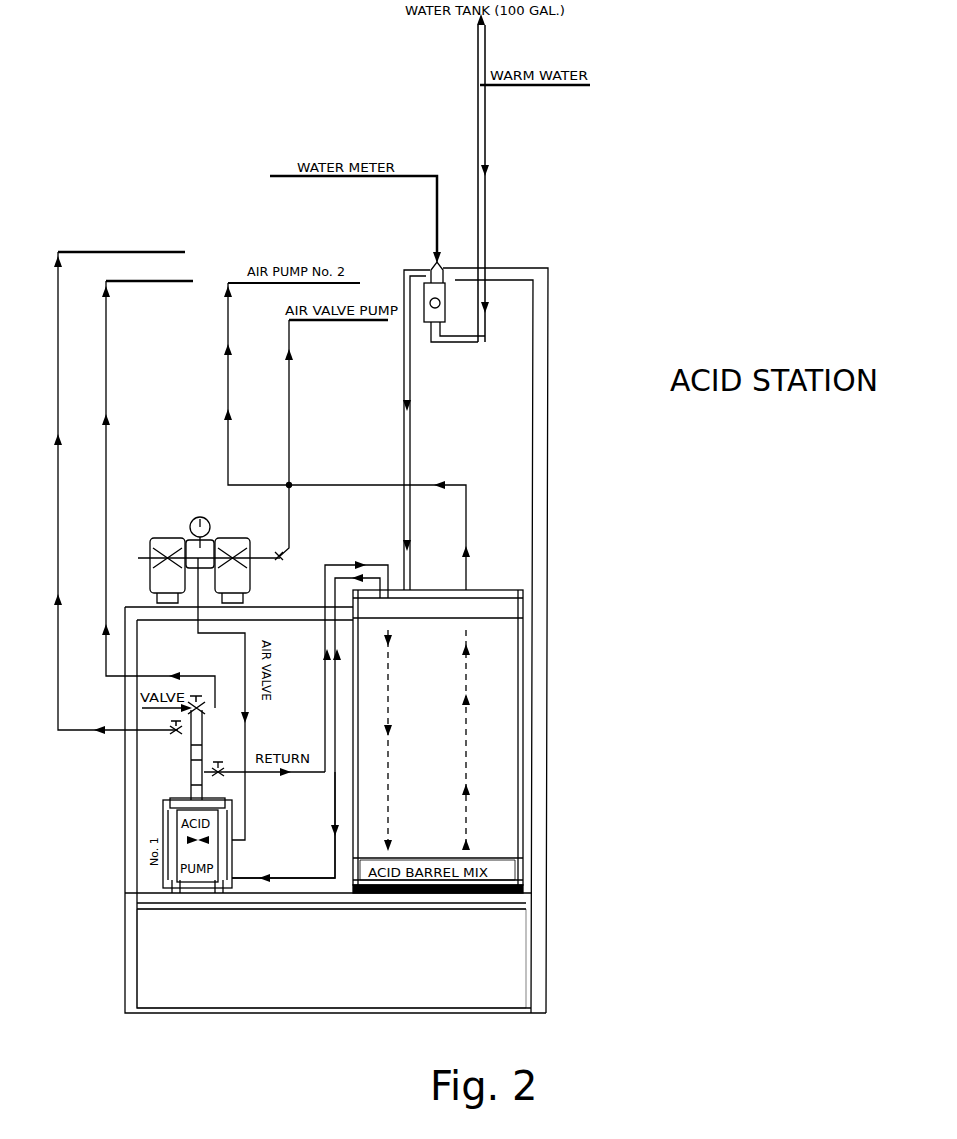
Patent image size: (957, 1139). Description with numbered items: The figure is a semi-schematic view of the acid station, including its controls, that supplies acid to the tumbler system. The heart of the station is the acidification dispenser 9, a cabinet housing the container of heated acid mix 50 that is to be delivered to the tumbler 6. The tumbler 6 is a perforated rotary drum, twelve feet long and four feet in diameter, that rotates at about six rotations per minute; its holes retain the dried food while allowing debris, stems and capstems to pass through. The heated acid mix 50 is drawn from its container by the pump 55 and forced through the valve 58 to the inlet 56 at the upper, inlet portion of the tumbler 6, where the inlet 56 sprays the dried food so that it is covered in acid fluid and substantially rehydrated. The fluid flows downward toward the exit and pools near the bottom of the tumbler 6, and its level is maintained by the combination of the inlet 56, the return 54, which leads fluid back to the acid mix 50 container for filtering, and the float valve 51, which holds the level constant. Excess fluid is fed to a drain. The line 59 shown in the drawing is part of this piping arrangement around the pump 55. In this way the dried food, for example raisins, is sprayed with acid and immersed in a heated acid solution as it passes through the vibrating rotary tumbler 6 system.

The tumbler 6 is at (438, 741).
The acidification dispenser 9 is at (331, 958).
The acid mix 50 is at (437, 872).
The float valve 51 is at (158, 483).
The return 54 is at (264, 752).
The pump 55 is at (232, 862).
The inlet 56 is at (128, 482).
The valve 58 is at (151, 710).
The pump supply line 59 is at (285, 827).